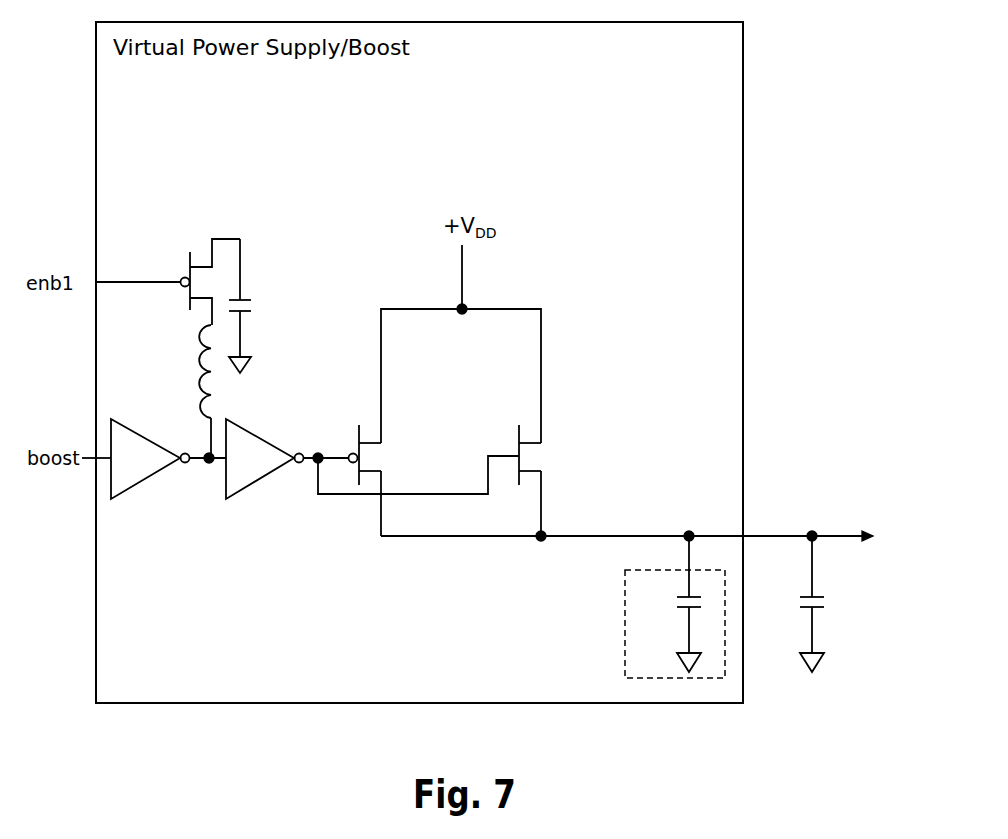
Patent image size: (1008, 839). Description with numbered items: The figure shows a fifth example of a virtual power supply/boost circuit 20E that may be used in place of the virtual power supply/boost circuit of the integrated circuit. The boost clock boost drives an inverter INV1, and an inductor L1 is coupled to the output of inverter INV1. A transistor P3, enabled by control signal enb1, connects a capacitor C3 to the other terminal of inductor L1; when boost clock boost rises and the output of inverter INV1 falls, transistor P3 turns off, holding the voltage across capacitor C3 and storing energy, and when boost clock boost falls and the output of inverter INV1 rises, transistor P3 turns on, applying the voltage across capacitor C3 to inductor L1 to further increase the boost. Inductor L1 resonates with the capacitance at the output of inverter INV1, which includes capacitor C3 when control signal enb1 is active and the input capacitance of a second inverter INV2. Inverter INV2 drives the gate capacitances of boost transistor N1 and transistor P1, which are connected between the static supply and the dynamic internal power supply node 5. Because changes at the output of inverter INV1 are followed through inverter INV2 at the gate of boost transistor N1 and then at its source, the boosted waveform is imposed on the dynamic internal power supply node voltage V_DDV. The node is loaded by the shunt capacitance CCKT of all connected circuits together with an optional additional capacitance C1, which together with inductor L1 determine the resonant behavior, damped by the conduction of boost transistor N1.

The virtual power supply/boost circuit 20E is at (495, 58).
The dynamic internal power supply node 5 is at (768, 533).
The transistor P3 is at (209, 275).
The capacitor C3 is at (262, 306).
The inductor L1 is at (180, 391).
The inverter INV1 is at (168, 468).
The inverter INV2 is at (287, 468).
The transistor P1 is at (385, 480).
The boost transistor N1 is at (445, 480).
The additional capacitance C1 is at (675, 607).
The circuit capacitance CCKT is at (844, 604).